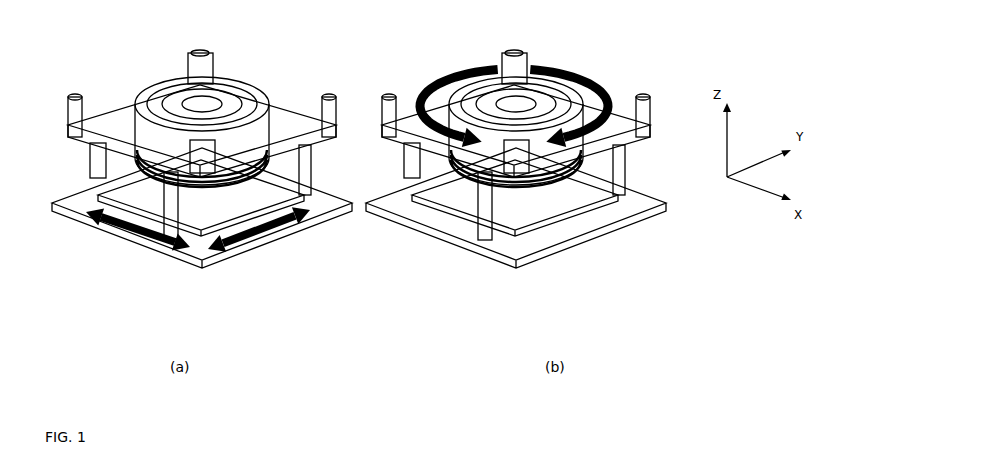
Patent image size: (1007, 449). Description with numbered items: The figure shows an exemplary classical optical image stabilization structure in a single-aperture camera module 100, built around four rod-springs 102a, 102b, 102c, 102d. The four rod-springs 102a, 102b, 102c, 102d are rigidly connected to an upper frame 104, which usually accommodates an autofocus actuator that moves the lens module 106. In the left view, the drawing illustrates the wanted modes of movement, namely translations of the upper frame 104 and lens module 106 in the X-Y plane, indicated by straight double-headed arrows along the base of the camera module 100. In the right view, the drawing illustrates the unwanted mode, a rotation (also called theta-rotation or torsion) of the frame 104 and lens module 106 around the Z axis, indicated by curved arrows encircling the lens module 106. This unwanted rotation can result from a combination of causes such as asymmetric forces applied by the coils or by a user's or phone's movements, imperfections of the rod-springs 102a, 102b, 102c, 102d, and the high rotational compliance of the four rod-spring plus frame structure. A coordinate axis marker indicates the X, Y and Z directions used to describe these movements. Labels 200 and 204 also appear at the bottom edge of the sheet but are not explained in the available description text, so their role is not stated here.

The single-aperture camera module 100 is at (365, 22).
The rod-spring 102a is at (405, 153).
The rod-spring 102b is at (488, 72).
The rod-spring 102c is at (622, 190).
The rod-spring 102d is at (490, 217).
The upper frame 104 is at (610, 147).
The lens module 106 is at (533, 77).
The camera module 200 is at (374, 442).
The base 204 is at (190, 446).